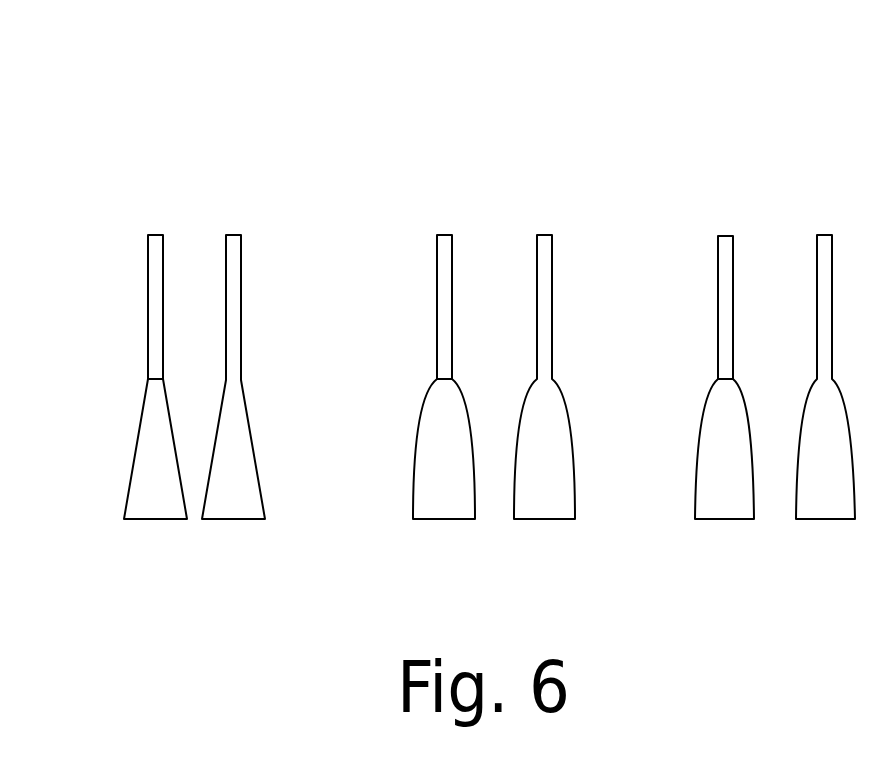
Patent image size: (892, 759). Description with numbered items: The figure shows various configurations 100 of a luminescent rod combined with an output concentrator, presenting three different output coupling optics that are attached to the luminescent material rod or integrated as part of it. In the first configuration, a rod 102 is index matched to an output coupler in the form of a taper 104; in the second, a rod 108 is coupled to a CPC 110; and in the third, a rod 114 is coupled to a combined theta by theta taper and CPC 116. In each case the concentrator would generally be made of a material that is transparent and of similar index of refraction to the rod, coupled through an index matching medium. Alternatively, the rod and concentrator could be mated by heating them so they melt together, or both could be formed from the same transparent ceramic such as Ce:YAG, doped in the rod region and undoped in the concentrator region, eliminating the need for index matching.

The configurations of luminescent rod and output concentrator combinations 100 is at (322, 120).
The luminescent rod 102 is at (137, 315).
The taper 104 is at (146, 463).
The luminescent rod 108 is at (427, 315).
The CPC 110 is at (440, 454).
The luminescent rod 114 is at (707, 315).
The combined theta by theta taper and CPC 116 is at (718, 455).